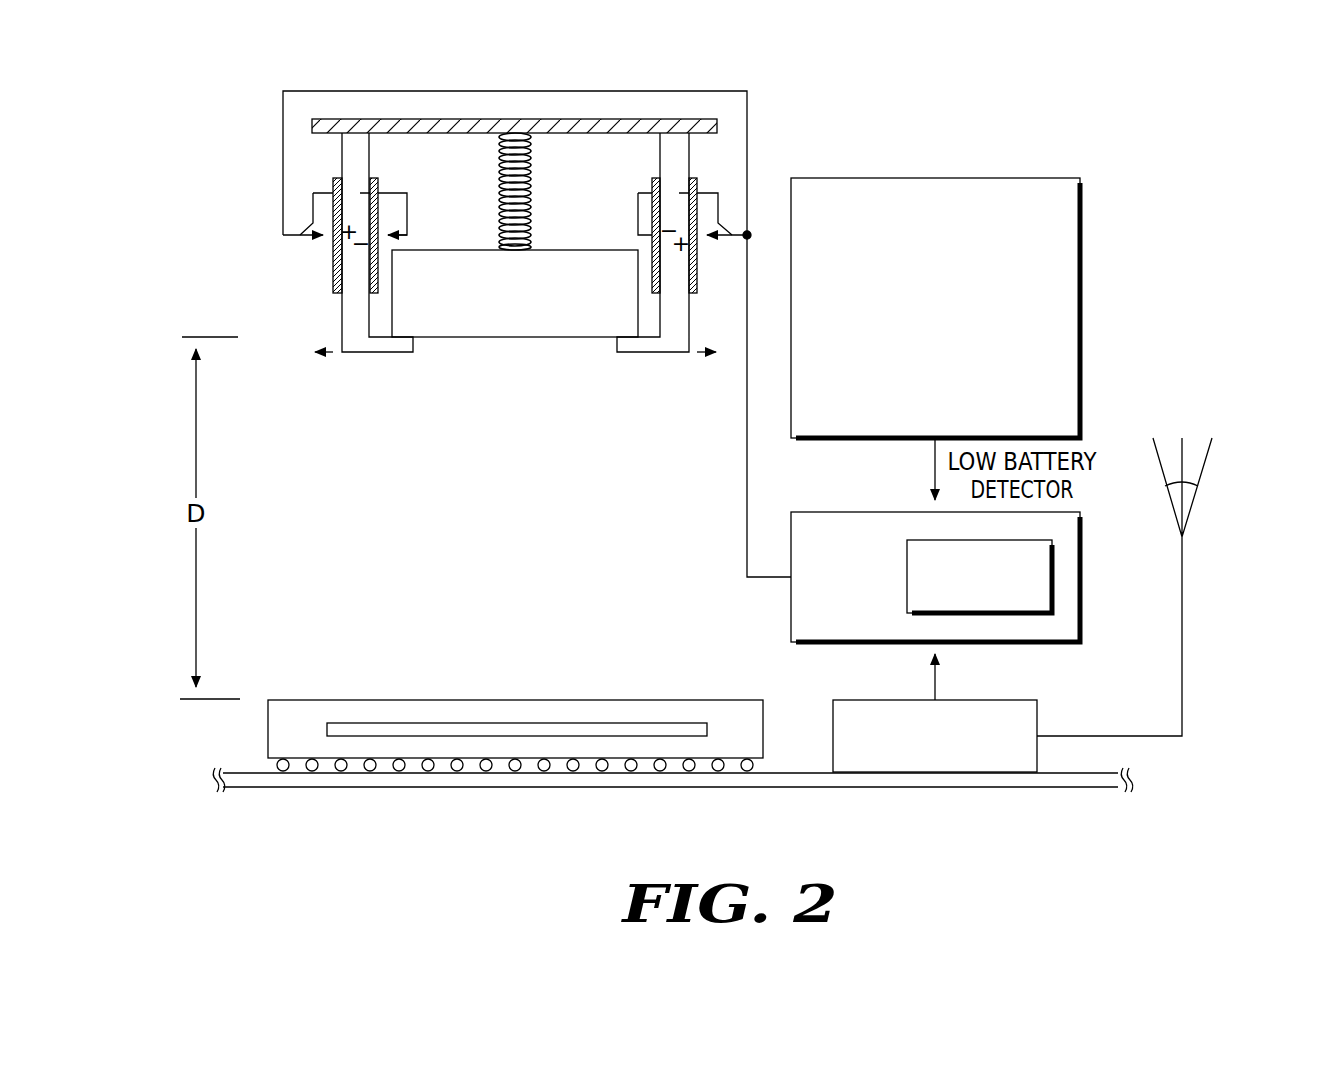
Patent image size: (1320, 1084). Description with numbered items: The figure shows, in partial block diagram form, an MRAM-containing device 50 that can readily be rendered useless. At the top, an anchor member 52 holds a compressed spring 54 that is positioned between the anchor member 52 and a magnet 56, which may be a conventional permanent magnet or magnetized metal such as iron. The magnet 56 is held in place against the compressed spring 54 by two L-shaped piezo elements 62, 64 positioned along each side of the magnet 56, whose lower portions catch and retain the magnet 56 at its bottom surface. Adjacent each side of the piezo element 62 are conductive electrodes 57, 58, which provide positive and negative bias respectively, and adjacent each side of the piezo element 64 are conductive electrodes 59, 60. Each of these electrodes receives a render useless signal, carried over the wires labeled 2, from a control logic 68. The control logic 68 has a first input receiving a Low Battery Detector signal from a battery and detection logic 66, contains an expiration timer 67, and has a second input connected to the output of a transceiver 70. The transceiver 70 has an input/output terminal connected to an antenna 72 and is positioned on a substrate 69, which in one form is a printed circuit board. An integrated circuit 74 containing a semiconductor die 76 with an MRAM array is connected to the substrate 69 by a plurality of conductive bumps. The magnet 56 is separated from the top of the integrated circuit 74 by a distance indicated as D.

The wires 2 is at (291, 138).
The MRAM-containing device 50 is at (514, 860).
The anchor member 52 is at (437, 134).
The compressed spring 54 is at (532, 186).
The magnet 56 is at (573, 324).
The conductive electrode 57 is at (330, 256).
The conductive electrode 58 is at (370, 272).
The conductive electrode 59 is at (652, 181).
The conductive electrode 60 is at (700, 184).
The piezo element 62 is at (362, 155).
The piezo element 64 is at (670, 153).
The battery and detection logic 66 is at (993, 398).
The expiration timer 67 is at (1053, 571).
The control logic 68 is at (877, 628).
The substrate 69 is at (357, 783).
The transceiver 70 is at (1038, 718).
The antenna 72 is at (1190, 517).
The integrated circuit 74 is at (272, 742).
The semiconductor die 76 is at (370, 723).